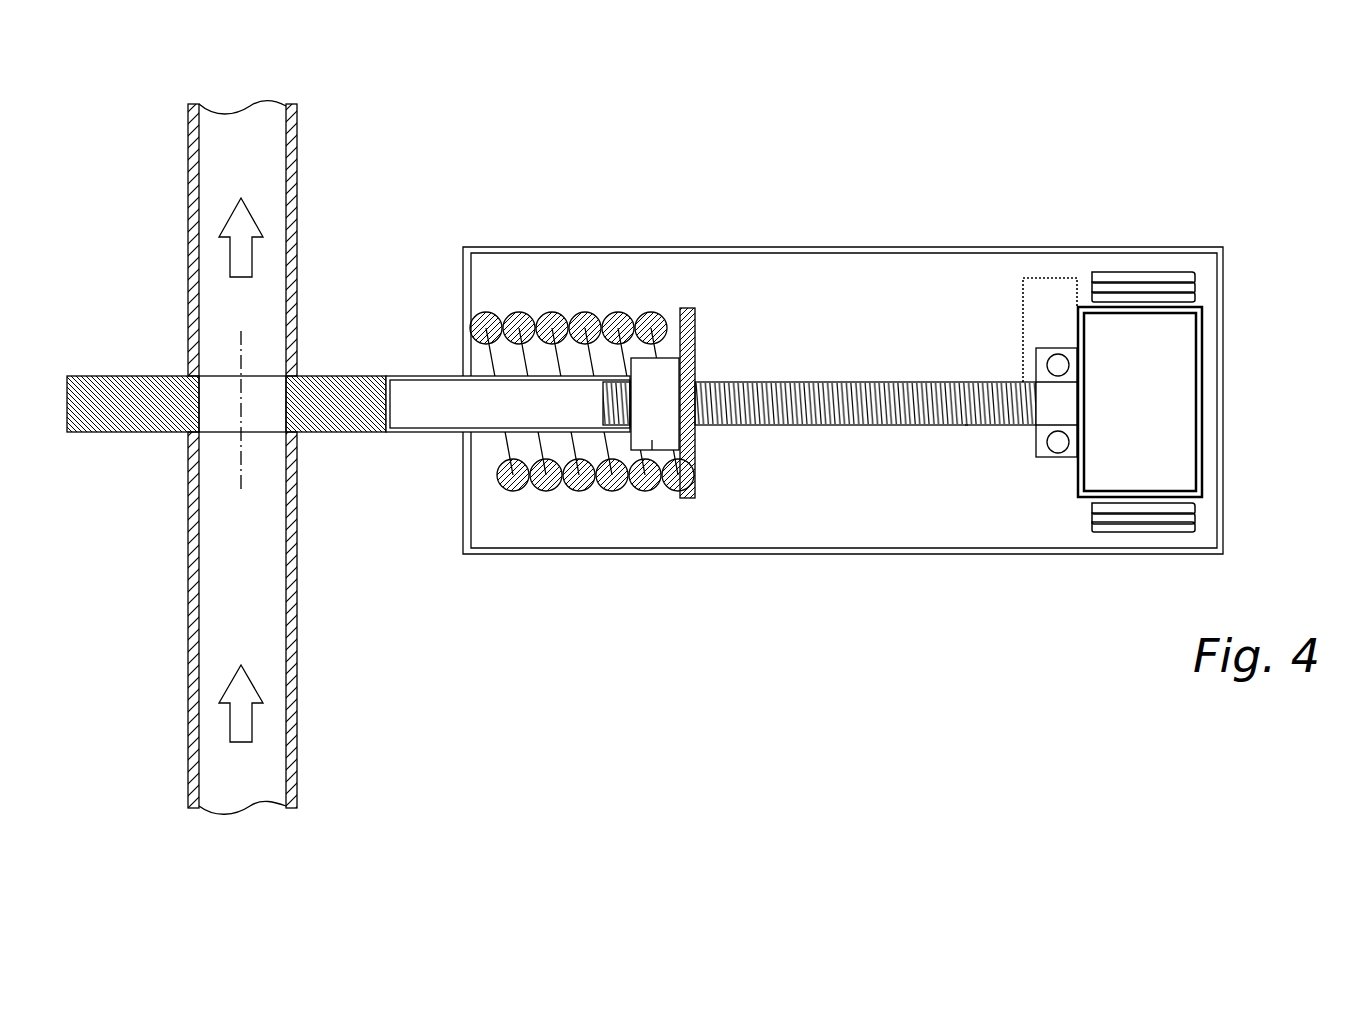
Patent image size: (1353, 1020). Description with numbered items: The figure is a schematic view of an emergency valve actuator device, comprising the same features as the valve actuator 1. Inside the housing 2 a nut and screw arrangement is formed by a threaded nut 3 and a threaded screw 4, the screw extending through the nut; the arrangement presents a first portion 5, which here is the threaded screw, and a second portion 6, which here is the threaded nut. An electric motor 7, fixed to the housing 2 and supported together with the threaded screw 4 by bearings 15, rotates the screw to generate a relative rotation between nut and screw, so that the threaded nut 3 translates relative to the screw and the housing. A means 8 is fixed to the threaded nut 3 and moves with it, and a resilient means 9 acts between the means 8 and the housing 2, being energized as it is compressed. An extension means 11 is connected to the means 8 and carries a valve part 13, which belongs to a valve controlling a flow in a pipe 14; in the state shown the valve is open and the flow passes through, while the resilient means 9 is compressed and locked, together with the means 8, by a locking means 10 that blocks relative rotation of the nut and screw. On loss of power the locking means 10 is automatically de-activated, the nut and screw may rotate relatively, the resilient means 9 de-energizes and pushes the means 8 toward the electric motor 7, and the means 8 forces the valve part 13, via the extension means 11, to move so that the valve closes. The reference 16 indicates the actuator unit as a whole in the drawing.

The valve actuator 1 is at (1230, 190).
The housing 2 is at (707, 248).
The threaded nut 3 is at (655, 370).
The threaded screw 4 is at (935, 382).
The first portion 5 is at (968, 425).
The second portion 6 is at (652, 440).
The electric motor 7 is at (1205, 340).
The means 8 is at (690, 500).
The resilient means 9 is at (520, 315).
The locking means 10 is at (1067, 278).
The extension means 11 is at (453, 375).
The valve part 13 is at (118, 430).
The pipe 14 is at (298, 218).
The bearings 15 is at (1058, 446).
The actuator unit 16 is at (820, 143).